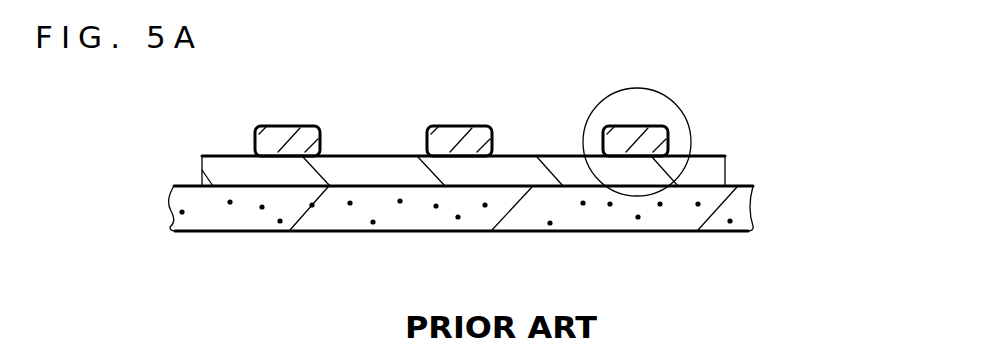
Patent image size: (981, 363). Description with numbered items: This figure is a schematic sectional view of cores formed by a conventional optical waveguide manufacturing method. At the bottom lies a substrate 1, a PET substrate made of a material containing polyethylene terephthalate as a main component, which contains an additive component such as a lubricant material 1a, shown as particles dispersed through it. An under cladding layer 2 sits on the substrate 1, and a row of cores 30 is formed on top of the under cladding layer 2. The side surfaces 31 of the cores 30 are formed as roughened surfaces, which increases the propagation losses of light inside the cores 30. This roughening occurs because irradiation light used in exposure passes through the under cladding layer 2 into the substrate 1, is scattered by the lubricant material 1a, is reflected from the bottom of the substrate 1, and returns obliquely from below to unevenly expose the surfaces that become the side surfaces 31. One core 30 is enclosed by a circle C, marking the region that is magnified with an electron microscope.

The substrate 1 is at (745, 208).
The lubricant material 1a is at (232, 202).
The under cladding layer 2 is at (710, 172).
The core 30 is at (448, 152).
The side surface 31 is at (427, 140).
The circle C is at (677, 103).